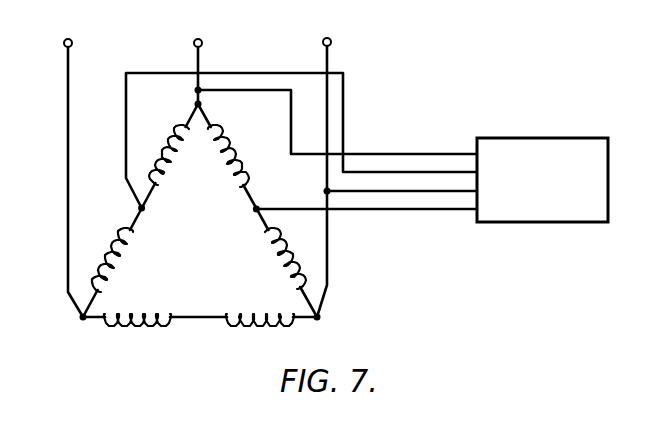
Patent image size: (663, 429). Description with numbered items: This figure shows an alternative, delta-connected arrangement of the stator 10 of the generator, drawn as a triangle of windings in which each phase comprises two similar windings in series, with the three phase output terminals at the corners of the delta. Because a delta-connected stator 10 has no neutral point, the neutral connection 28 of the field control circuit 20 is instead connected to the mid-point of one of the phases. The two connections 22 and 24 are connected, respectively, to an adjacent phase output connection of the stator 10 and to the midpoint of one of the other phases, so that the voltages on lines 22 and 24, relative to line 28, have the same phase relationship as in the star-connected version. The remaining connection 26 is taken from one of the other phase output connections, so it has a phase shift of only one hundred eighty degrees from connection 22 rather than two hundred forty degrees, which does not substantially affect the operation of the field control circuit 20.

The stator 10 is at (80, 327).
The field control circuit 20 is at (521, 192).
The connection 22 is at (432, 191).
The connection 24 is at (385, 172).
The remaining connection 26 is at (435, 154).
The neutral connection 28 is at (377, 209).